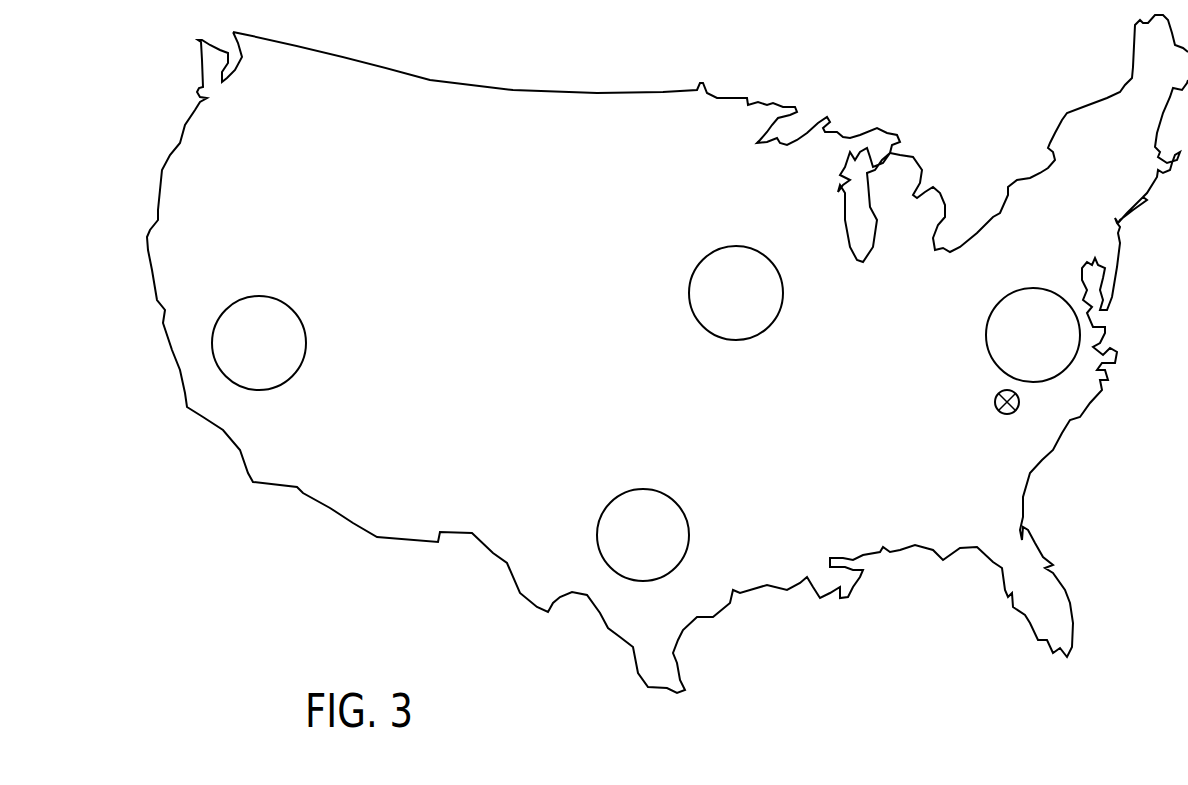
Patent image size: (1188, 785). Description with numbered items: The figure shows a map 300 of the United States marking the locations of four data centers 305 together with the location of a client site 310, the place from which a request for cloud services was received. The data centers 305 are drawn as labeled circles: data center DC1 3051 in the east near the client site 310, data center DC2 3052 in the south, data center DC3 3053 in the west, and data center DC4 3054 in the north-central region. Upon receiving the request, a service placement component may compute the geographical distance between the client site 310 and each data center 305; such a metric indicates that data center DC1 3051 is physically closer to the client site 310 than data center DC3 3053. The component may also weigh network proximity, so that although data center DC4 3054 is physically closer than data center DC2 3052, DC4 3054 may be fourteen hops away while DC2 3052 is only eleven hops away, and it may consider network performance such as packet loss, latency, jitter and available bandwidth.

The map 300 is at (965, 93).
The data centers 305 is at (646, 404).
The data center DC1 3051 is at (1018, 288).
The data center DC2 3052 is at (672, 497).
The data center DC3 3053 is at (293, 377).
The data center DC4 3054 is at (768, 325).
The client site 310 is at (995, 402).